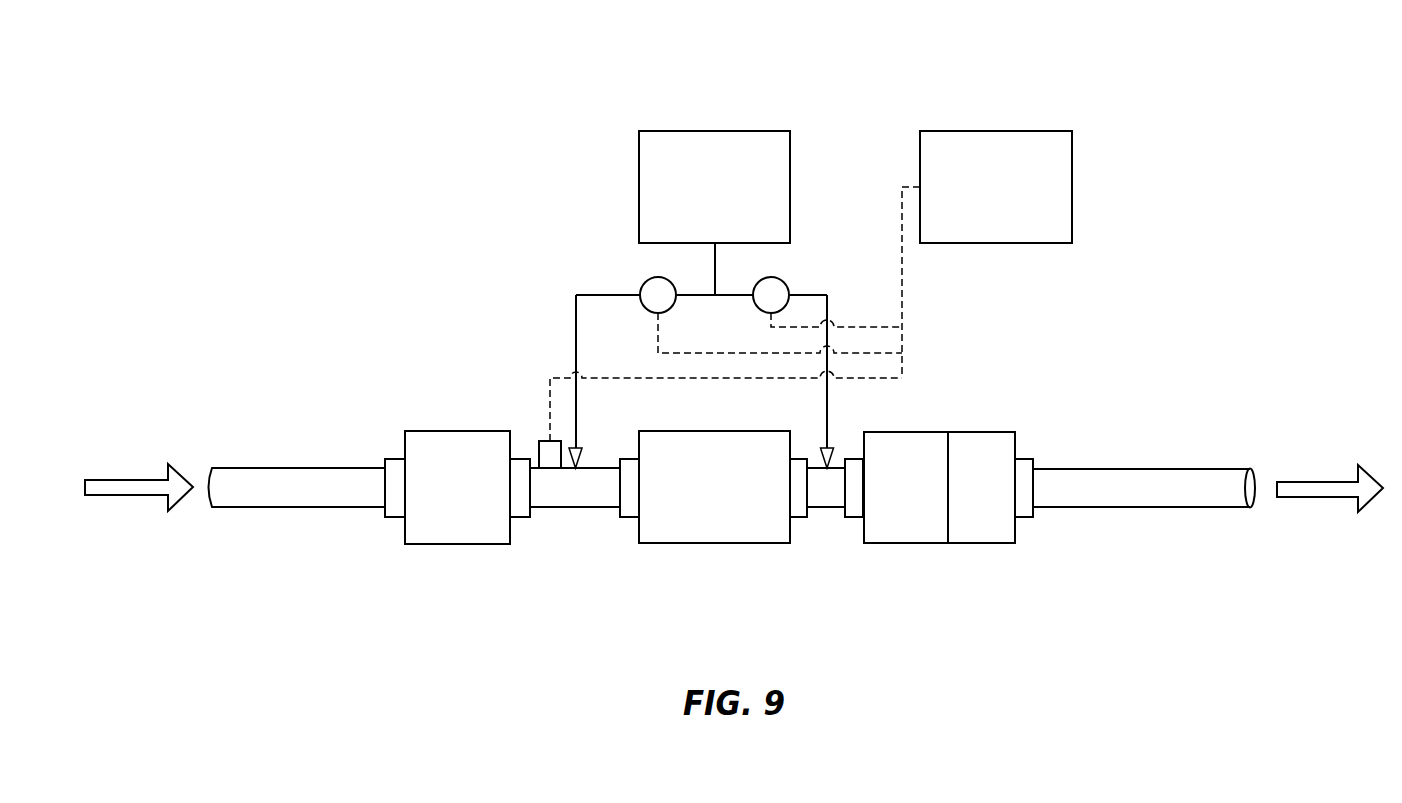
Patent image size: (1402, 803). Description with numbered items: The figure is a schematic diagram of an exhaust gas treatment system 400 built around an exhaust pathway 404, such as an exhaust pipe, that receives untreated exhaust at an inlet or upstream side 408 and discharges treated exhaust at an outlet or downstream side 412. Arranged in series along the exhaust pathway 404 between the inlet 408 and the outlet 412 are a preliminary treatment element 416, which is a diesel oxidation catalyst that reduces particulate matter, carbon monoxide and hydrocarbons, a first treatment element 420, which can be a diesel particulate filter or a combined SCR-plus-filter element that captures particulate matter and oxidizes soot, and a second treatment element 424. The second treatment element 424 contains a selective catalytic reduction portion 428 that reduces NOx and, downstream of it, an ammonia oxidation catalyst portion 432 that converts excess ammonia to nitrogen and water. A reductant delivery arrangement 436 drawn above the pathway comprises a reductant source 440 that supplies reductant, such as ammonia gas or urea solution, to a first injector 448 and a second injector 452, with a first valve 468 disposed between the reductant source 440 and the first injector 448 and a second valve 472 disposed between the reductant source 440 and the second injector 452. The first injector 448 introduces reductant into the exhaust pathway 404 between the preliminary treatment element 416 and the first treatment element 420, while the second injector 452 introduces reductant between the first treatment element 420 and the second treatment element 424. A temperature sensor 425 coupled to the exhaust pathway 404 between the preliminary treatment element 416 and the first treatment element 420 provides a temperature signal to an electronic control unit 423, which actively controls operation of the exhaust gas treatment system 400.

The exhaust gas treatment system 400 is at (433, 325).
The exhaust pathway 404 is at (308, 508).
The inlet or upstream side 408 is at (212, 468).
The outlet or downstream side 412 is at (1248, 469).
The preliminary treatment element 416 is at (457, 545).
The first treatment element 420 is at (713, 545).
The electronic control unit 423 is at (1072, 187).
The second treatment element 424 is at (950, 543).
The temperature sensor 425 is at (540, 441).
The selective catalytic reduction portion 428 is at (907, 543).
The ammonia oxidation catalyst portion 432 is at (982, 543).
The reductant delivery system 436 is at (772, 78).
The reductant source 440 is at (639, 187).
The first injector 448 is at (577, 448).
The second injector 452 is at (827, 448).
The first valve 468 is at (658, 277).
The second valve 472 is at (771, 277).